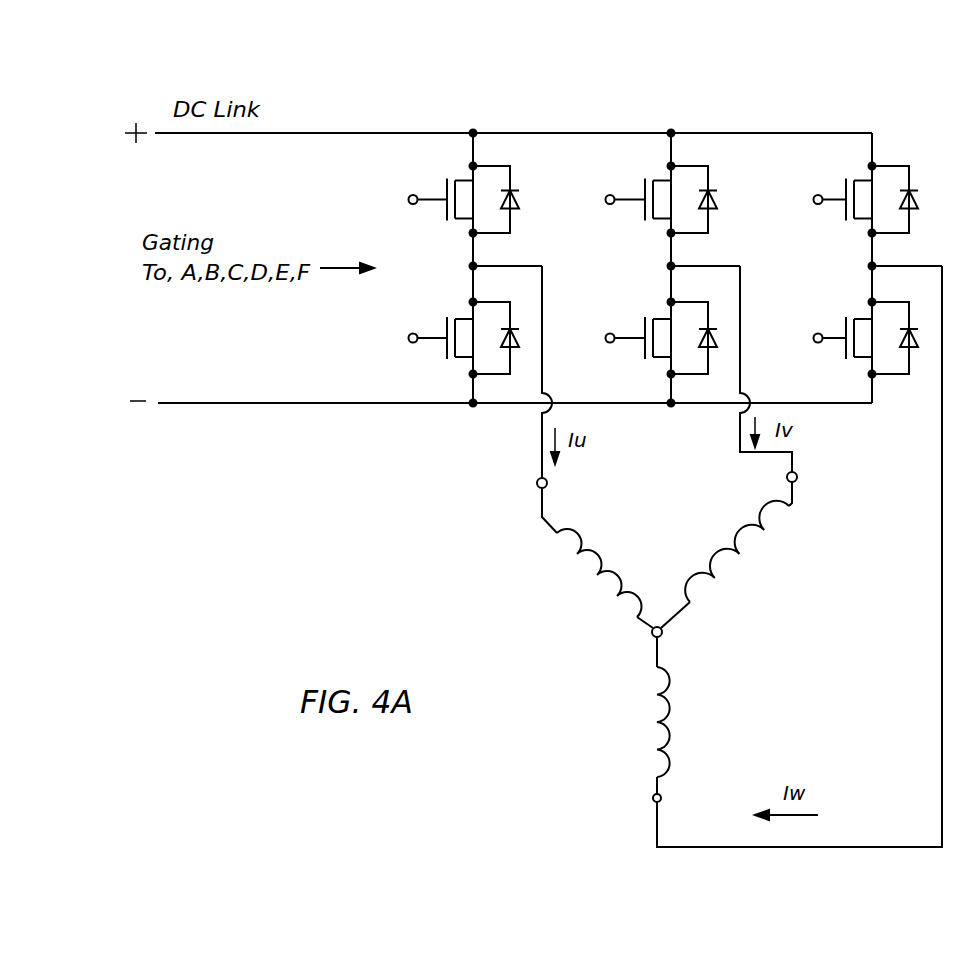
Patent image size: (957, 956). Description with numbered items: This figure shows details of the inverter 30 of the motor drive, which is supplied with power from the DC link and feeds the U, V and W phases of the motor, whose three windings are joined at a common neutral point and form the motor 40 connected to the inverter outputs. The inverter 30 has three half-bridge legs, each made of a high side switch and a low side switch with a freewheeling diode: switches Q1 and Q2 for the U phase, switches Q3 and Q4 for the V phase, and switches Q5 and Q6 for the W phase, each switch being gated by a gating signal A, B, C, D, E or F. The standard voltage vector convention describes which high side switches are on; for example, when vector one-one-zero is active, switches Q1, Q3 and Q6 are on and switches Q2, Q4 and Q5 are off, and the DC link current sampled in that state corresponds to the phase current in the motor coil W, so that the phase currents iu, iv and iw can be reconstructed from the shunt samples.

The inverter 30 is at (547, 117).
The motor windings 40 is at (587, 596).
The switch Q1 is at (452, 193).
The switch Q2 is at (453, 332).
The switch Q3 is at (650, 193).
The switch Q4 is at (651, 332).
The switch Q5 is at (855, 193).
The switch Q6 is at (855, 332).